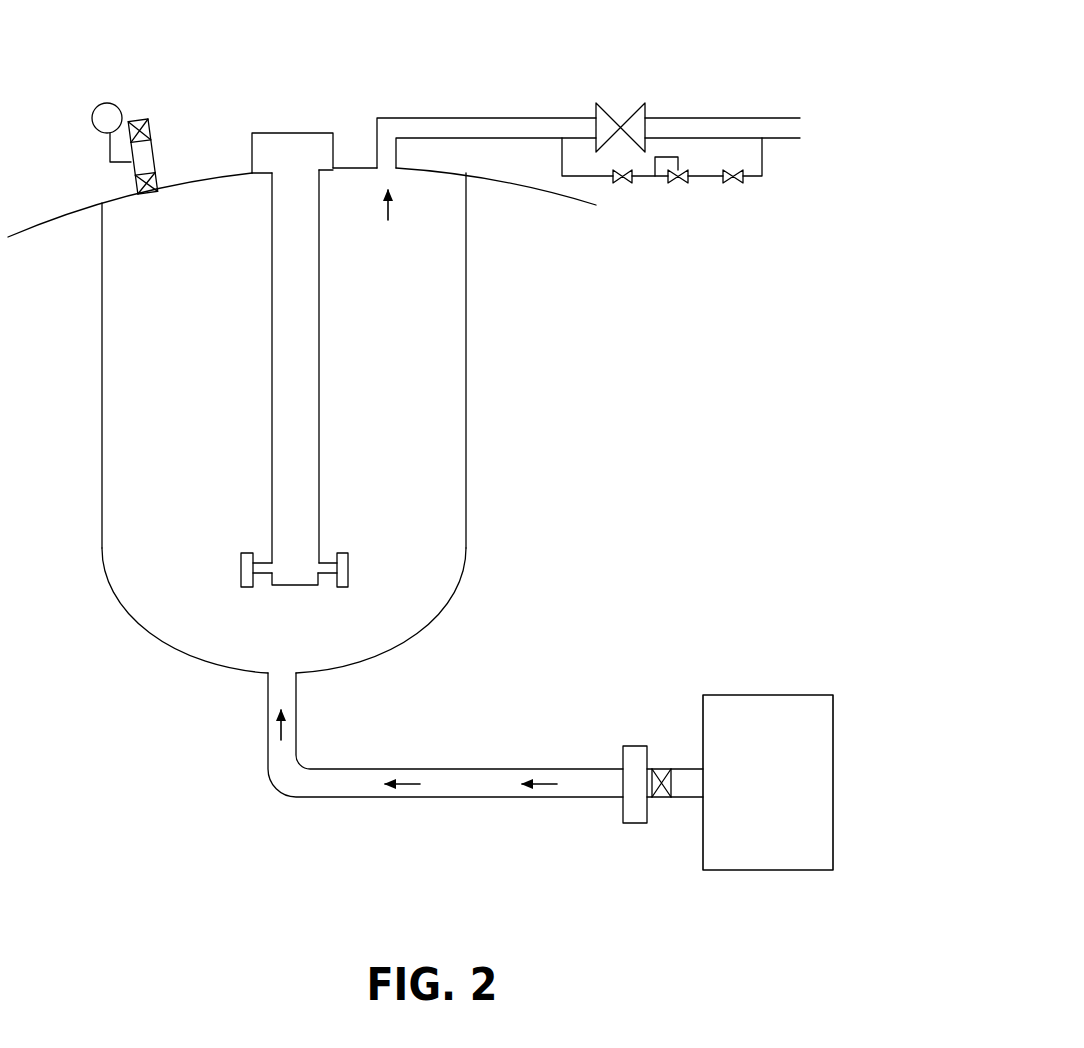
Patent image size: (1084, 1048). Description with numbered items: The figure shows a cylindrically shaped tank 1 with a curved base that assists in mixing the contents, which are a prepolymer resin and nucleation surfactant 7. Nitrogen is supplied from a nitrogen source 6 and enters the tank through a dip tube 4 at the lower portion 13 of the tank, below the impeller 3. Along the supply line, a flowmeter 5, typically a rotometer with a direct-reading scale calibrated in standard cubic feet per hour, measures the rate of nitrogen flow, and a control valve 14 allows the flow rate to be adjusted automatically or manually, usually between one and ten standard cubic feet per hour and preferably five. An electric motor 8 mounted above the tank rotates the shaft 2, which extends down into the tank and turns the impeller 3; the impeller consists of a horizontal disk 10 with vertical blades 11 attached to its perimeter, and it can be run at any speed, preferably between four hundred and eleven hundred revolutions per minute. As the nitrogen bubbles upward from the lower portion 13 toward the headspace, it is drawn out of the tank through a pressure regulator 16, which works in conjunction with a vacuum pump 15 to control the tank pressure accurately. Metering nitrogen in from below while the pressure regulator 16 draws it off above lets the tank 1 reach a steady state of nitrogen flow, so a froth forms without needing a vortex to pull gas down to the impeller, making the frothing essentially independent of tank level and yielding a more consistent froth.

The tank 1 is at (68, 75).
The shaft 2 is at (328, 386).
The impeller 3 is at (353, 560).
The dip tube 4 is at (317, 755).
The flowmeter 5 is at (633, 832).
The nitrogen source 6 is at (754, 757).
The prepolymer resin and nucleation surfactant 7 is at (133, 497).
The electric motor 8 is at (345, 148).
The horizontal disk 10 is at (262, 580).
The vertical blades 11 is at (232, 573).
The lower portion of the tank 13 is at (168, 665).
The control valve 14 is at (662, 765).
The vacuum pump 15 is at (645, 102).
The pressure regulator 16 is at (167, 152).